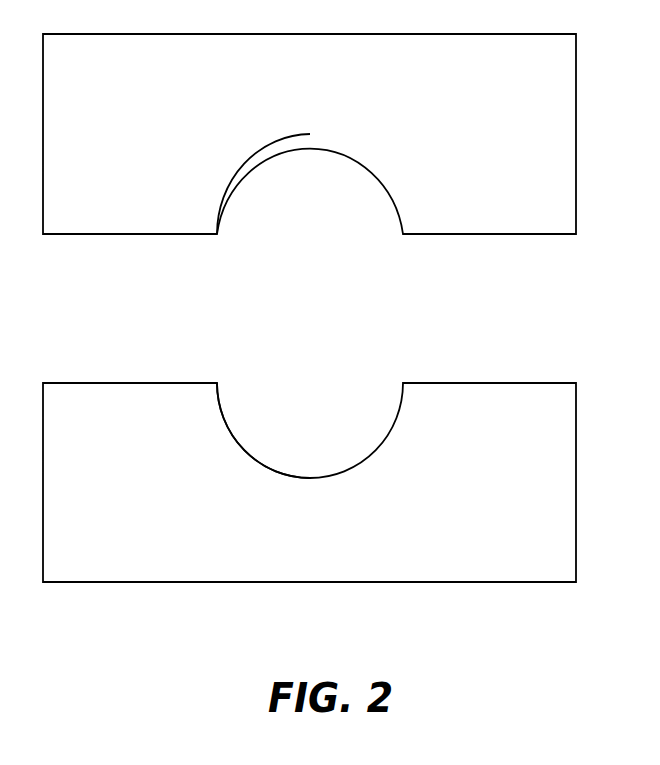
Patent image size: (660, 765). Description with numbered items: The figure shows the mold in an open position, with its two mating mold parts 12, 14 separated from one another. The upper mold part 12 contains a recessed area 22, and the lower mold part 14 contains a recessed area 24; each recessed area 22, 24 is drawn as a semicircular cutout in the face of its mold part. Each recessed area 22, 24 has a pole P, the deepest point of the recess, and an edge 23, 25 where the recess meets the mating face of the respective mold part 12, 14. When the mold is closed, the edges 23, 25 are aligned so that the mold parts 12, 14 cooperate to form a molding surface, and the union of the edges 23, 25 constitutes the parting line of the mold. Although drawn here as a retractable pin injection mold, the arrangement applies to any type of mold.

The mold part 12 is at (553, 79).
The mold part 14 is at (558, 512).
The recessed area 22 is at (258, 152).
The edge 23 is at (403, 236).
The recessed area 24 is at (260, 462).
The edge 25 is at (404, 382).
The pole P is at (333, 138).